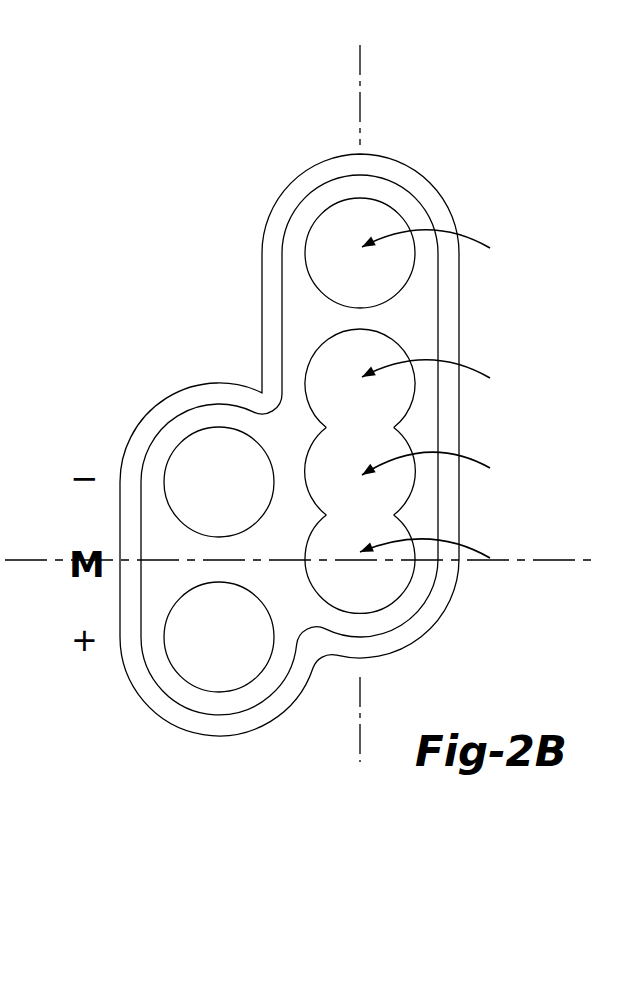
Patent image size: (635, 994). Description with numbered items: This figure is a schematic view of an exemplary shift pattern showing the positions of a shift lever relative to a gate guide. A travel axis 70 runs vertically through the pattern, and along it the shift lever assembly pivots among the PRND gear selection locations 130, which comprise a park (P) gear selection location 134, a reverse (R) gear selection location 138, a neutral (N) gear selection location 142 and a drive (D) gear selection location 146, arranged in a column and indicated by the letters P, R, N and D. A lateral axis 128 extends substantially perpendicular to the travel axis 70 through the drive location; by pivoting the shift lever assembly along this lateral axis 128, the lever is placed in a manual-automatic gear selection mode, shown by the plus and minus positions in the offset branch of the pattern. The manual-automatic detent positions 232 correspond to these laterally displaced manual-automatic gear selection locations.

The travel axis 70 is at (357, 94).
The lateral axis 128 is at (580, 560).
The PRND gear selection locations 130 is at (491, 405).
The park (P) gear selection location 134 is at (306, 258).
The reverse (R) gear selection location 138 is at (306, 385).
The neutral (N) gear selection location 142 is at (307, 488).
The drive (D) gear selection location 146 is at (307, 563).
The manual-automatic detent positions 232 is at (155, 603).